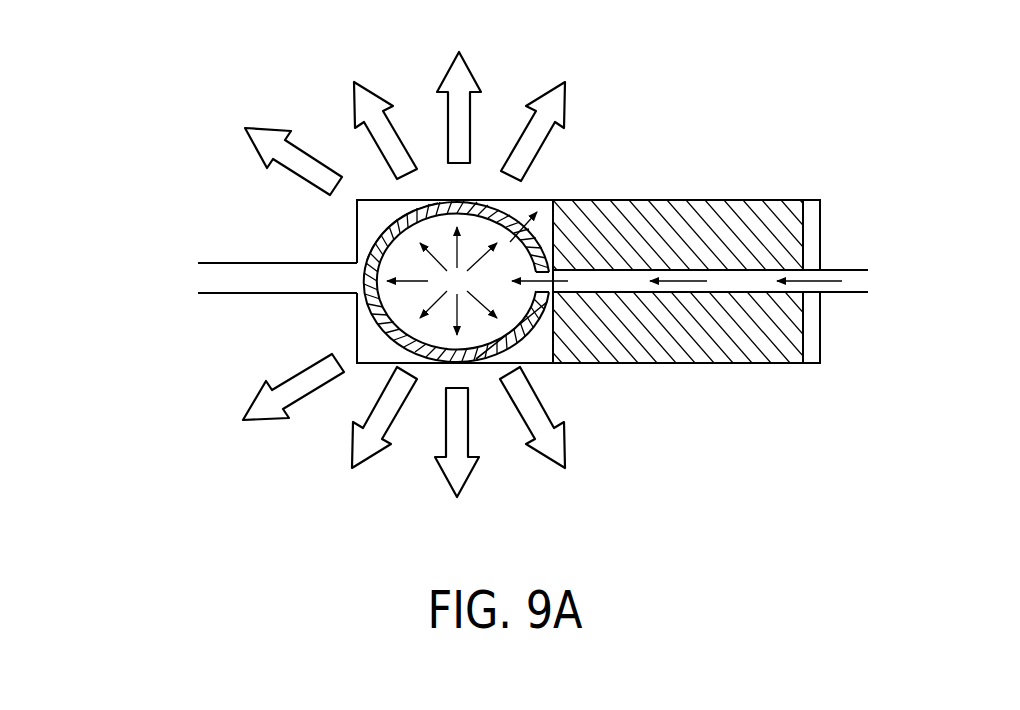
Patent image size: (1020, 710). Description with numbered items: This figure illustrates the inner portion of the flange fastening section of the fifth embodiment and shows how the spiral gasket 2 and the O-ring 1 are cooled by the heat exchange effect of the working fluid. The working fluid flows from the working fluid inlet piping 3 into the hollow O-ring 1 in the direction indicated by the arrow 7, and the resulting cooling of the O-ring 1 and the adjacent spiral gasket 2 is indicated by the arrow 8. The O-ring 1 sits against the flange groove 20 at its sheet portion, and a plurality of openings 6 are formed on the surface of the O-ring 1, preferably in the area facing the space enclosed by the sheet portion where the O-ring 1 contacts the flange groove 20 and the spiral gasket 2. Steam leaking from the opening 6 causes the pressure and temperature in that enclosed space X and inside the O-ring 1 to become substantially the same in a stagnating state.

The O-ring 1 is at (478, 200).
The spiral gasket 2 is at (627, 220).
The working fluid inlet piping 3 is at (843, 270).
The opening 6 is at (533, 234).
The arrow 7 is at (695, 282).
The arrow 8 is at (540, 450).
The flange groove 20 is at (222, 283).
The space X is at (520, 343).